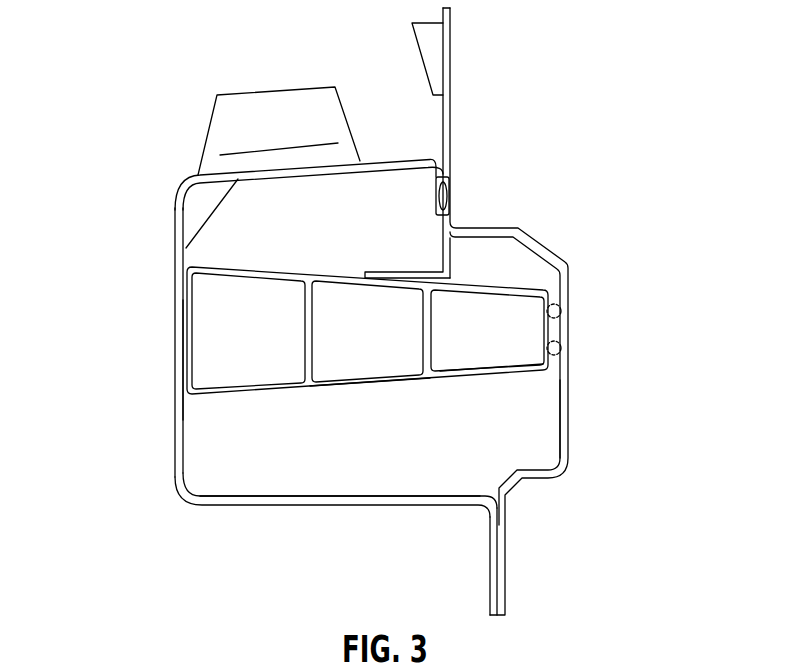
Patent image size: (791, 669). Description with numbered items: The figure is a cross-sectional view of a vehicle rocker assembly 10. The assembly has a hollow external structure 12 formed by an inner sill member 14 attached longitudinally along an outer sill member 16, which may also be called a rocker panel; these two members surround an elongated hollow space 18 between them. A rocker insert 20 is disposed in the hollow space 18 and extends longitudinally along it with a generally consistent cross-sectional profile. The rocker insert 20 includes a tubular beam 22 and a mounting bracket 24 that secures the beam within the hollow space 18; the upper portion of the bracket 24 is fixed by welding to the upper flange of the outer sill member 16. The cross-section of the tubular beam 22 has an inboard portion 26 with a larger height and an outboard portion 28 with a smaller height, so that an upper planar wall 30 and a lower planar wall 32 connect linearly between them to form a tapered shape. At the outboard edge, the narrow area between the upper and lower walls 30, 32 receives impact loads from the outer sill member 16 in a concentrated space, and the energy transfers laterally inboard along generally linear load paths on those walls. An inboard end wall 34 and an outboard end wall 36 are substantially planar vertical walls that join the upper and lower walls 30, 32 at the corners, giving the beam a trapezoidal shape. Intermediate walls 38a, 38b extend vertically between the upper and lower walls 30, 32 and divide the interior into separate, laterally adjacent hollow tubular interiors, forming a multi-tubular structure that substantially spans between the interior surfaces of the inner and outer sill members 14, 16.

The vehicle rocker assembly 10 is at (137, 102).
The hollow external structure 12 is at (370, 108).
The inner sill member 14 is at (173, 239).
The outer sill member 16 is at (543, 248).
The elongated hollow space 18 is at (348, 449).
The rocker insert 20 is at (485, 402).
The tubular beam 22 is at (278, 262).
The mounting bracket 24 is at (436, 246).
The inboard portion 26 is at (206, 399).
The outboard portion 28 is at (530, 375).
The upper planar wall 30 is at (230, 266).
The lower planar wall 32 is at (389, 378).
The inboard end wall 34 is at (182, 357).
The outboard end wall 36 is at (555, 333).
The intermediate wall 38a is at (303, 328).
The intermediate wall 38b is at (433, 332).